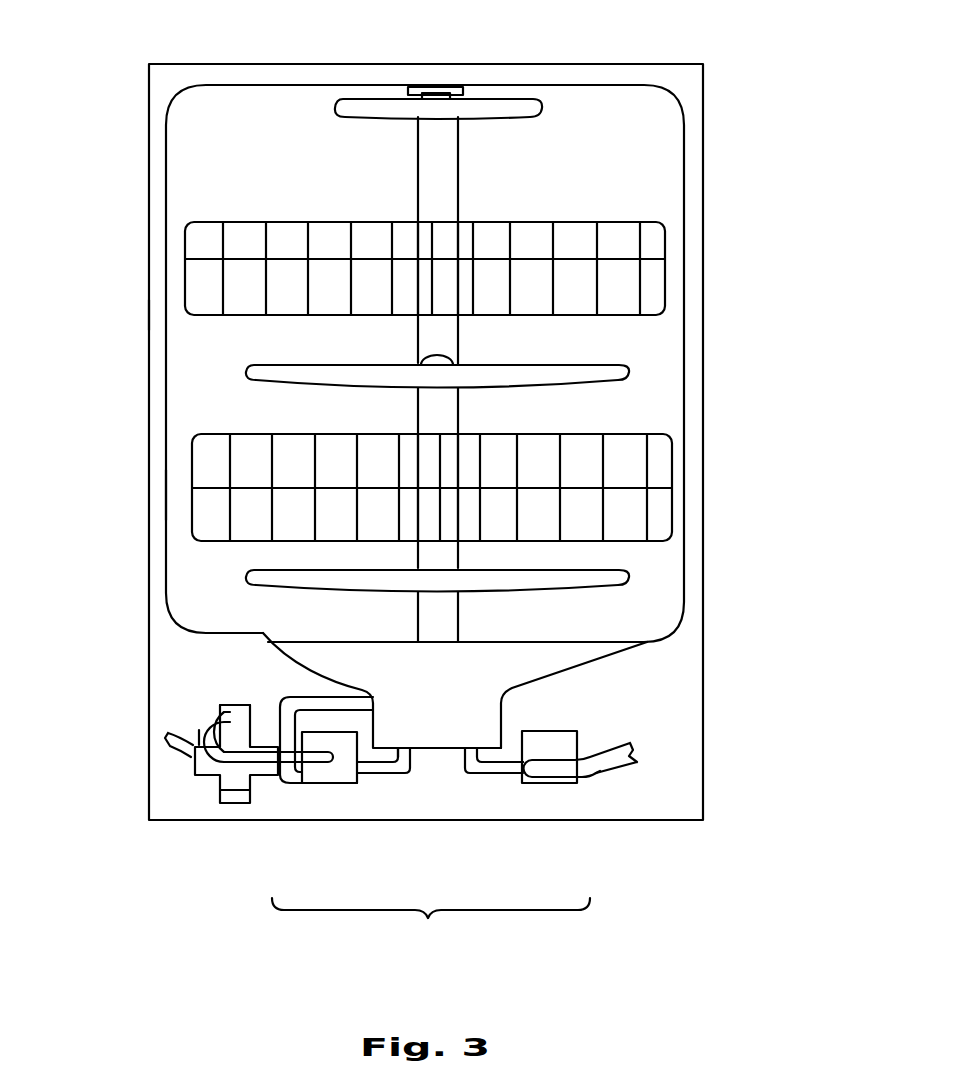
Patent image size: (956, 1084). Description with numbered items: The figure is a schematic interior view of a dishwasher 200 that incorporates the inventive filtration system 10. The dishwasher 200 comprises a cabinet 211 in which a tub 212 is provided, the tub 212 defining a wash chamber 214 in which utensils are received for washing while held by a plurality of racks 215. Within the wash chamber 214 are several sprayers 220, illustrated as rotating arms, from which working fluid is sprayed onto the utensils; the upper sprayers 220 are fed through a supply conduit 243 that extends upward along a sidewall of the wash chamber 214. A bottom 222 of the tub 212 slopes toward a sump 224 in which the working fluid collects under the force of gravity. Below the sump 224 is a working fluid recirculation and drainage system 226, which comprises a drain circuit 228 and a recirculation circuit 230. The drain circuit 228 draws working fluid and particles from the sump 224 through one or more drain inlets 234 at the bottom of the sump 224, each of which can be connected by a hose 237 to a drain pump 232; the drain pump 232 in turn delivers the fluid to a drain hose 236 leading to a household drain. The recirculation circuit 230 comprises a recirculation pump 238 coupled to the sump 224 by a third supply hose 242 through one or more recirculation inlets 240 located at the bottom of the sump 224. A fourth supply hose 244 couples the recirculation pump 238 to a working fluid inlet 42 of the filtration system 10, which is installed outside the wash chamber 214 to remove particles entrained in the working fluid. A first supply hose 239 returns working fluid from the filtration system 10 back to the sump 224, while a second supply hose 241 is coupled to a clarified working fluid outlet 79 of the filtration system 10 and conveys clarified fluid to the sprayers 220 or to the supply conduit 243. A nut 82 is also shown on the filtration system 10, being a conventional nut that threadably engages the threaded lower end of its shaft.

The dishwasher 200 is at (825, 40).
The cabinet 211 is at (148, 316).
The tub 212 is at (165, 492).
The wash chamber 214 is at (625, 146).
The racks 215 is at (665, 237).
The sprayers 220 is at (540, 107).
The bottom 222 is at (647, 643).
The sump 224 is at (455, 712).
The working fluid recirculation and drainage system 226 is at (431, 925).
The drain circuit 228 is at (602, 798).
The recirculation circuit 230 is at (340, 801).
The drain pump 232 is at (555, 748).
The drain inlets 234 is at (473, 767).
The drain hose 236 is at (617, 762).
The hose 237 is at (505, 768).
The recirculation pump 238 is at (322, 775).
The first supply hose 239 is at (327, 700).
The recirculation inlets 240 is at (383, 768).
The second supply hose 241 is at (172, 757).
The third supply hose 242 is at (397, 778).
The supply conduit 243 is at (418, 548).
The fourth supply hose 244 is at (200, 718).
The filtration system 10 is at (212, 694).
The working fluid inlet 42 is at (212, 713).
The clarified working fluid outlet 79 is at (195, 763).
The nut 82 is at (258, 803).